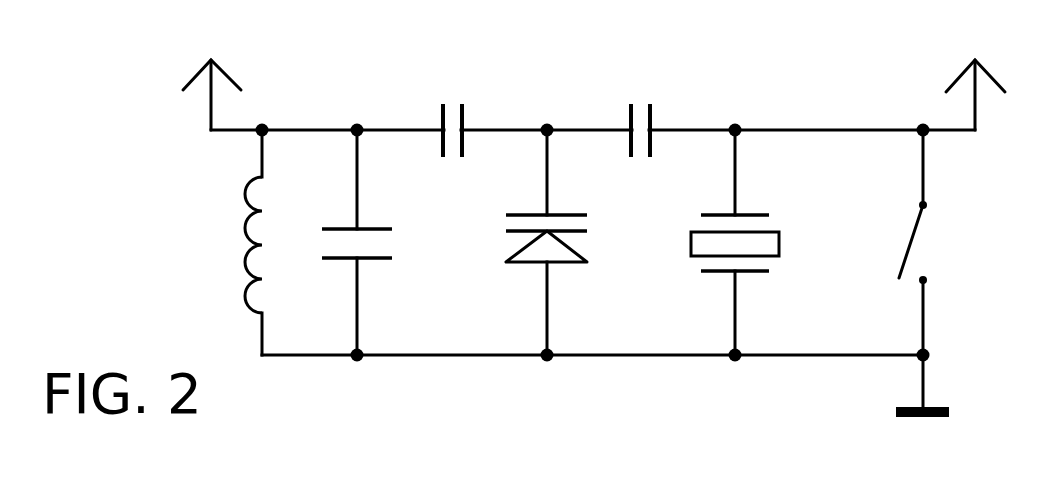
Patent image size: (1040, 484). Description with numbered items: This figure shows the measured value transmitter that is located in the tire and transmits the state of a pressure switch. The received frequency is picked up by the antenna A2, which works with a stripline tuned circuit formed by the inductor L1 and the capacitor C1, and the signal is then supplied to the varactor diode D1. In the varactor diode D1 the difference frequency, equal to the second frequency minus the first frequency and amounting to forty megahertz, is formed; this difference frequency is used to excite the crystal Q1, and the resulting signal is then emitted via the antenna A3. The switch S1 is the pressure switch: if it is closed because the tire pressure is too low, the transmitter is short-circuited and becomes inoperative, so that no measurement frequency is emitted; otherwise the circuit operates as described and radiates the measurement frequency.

The antenna A2 is at (214, 95).
The antenna A3 is at (977, 95).
The inductor of the tuned circuit L1 is at (237, 245).
The capacitor of the tuned circuit C1 is at (355, 270).
The varactor diode D1 is at (546, 263).
The crystal Q1 is at (735, 263).
The switch S1 is at (904, 256).